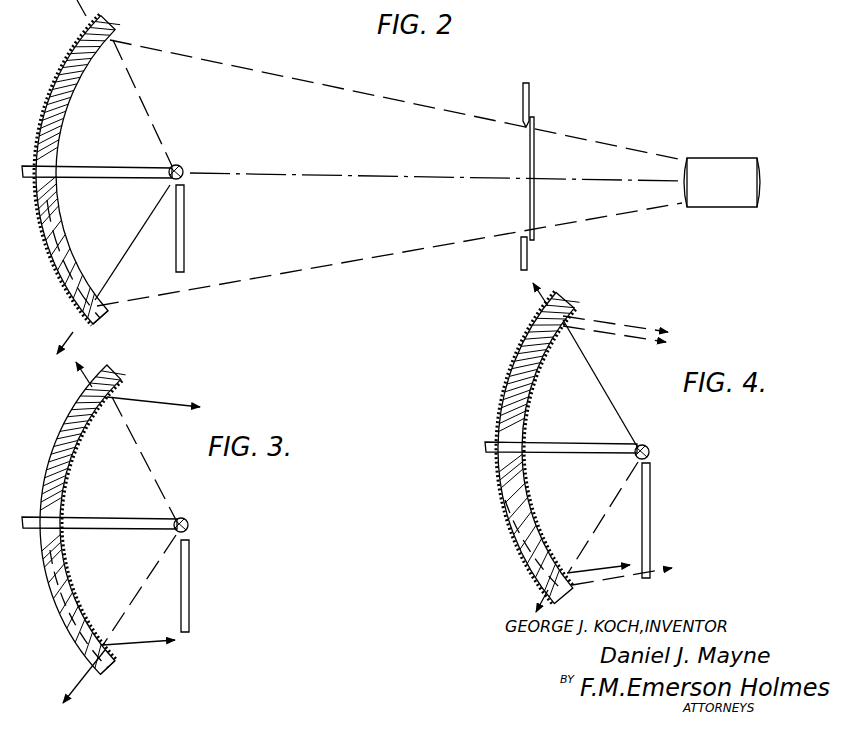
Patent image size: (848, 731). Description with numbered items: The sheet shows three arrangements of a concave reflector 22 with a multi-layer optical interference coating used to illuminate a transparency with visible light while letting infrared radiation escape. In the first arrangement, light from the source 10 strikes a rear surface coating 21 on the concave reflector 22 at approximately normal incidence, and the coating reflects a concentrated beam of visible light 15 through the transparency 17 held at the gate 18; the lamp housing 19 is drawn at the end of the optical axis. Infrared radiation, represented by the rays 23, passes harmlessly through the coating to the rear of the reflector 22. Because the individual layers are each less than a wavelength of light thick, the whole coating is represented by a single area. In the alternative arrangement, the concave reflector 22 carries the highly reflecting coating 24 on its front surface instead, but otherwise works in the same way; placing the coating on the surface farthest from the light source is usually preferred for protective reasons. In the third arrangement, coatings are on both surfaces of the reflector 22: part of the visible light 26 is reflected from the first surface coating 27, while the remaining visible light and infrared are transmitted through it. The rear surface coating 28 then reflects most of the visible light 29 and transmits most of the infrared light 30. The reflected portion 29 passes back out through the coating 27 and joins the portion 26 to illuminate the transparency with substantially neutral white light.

In FIG. 2, the light source 10 is at (184, 169).
In FIG. 3, the light source 10 is at (189, 521).
In FIG. 4, the light source 10 is at (652, 449).
In FIG. 2, the concentrated beam of visible light 15 is at (358, 93).
In FIG. 3, the concentrated beam of visible light 15 is at (160, 402).
In FIG. 2, the transparency 17 is at (536, 126).
In FIG. 2, the gate 18 is at (521, 98).
In FIG. 2, the light source lamp 19 is at (714, 167).
In FIG. 2, the rear surface coating 21 is at (97, 328).
In FIG. 2, the concave reflector 22 is at (113, 316).
In FIG. 3, the concave reflector 22 is at (104, 675).
In FIG. 4, the concave reflector 22 is at (572, 302).
In FIG. 2, the infrared radiation rays 23 is at (85, 29).
In FIG. 3, the infrared radiation rays 23 is at (88, 383).
In FIG. 3, the front surface highly reflecting coating 24 is at (118, 662).
In FIG. 4, the first-surface reflected visible light 26 is at (640, 341).
In FIG. 4, the first surface coating 27 is at (568, 316).
In FIG. 4, the rear surface coating 28 is at (558, 295).
In FIG. 4, the rear-surface reflected visible light 29 is at (653, 326).
In FIG. 4, the transmitted infrared light 30 is at (546, 303).